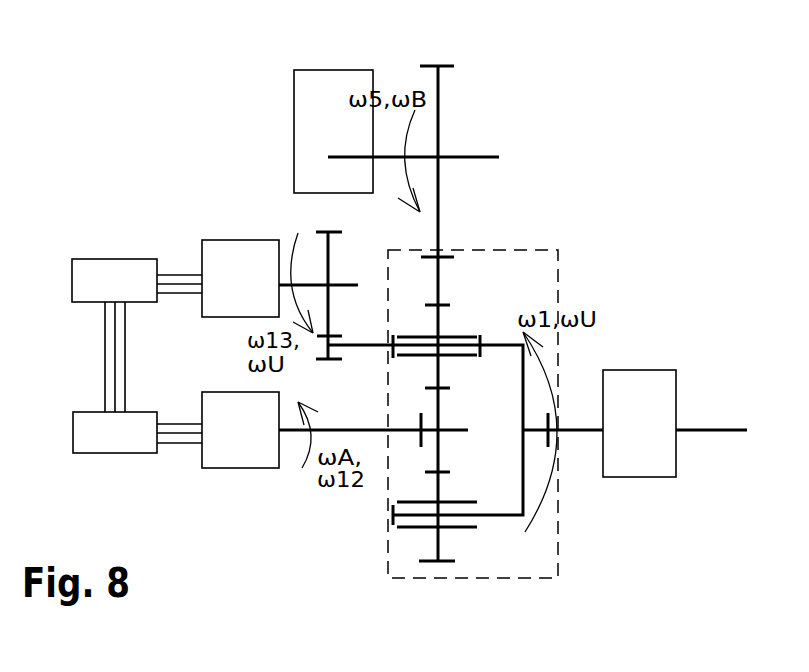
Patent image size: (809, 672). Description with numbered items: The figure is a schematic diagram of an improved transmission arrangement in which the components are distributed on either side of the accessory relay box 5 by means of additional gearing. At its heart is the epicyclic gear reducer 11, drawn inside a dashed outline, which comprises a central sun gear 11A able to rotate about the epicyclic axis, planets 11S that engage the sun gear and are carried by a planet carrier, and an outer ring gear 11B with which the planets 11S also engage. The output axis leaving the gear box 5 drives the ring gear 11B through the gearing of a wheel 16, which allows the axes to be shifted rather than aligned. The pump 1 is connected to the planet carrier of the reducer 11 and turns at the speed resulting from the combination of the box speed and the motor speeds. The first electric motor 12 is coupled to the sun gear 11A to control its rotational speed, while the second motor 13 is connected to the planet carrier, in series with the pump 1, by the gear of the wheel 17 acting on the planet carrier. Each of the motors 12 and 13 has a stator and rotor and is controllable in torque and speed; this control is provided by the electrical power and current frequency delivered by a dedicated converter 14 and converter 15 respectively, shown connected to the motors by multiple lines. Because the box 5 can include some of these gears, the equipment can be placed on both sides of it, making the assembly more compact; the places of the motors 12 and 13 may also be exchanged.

The pump 1 is at (650, 387).
The accessory relay box 5 is at (330, 90).
The epicyclic gear reducer 11 is at (496, 415).
The central sun gear 11A is at (440, 400).
The outer ring gear 11B is at (440, 280).
The planets 11S is at (470, 406).
The first electric motor 12 is at (228, 428).
The second motor 13 is at (219, 250).
The converter 14 is at (113, 428).
The converter 15 is at (108, 270).
The wheel 16 is at (440, 198).
The wheel 17 is at (327, 255).